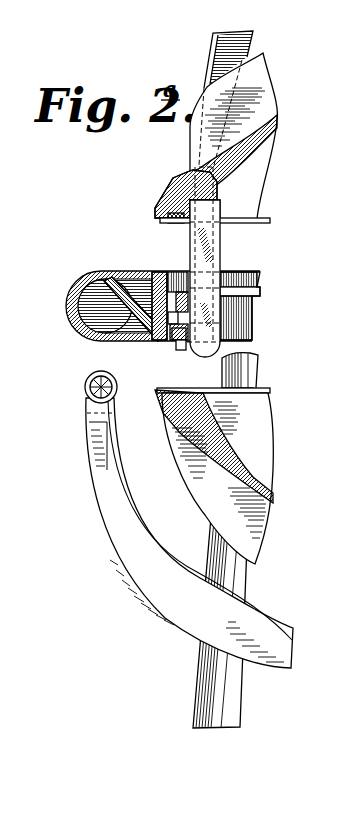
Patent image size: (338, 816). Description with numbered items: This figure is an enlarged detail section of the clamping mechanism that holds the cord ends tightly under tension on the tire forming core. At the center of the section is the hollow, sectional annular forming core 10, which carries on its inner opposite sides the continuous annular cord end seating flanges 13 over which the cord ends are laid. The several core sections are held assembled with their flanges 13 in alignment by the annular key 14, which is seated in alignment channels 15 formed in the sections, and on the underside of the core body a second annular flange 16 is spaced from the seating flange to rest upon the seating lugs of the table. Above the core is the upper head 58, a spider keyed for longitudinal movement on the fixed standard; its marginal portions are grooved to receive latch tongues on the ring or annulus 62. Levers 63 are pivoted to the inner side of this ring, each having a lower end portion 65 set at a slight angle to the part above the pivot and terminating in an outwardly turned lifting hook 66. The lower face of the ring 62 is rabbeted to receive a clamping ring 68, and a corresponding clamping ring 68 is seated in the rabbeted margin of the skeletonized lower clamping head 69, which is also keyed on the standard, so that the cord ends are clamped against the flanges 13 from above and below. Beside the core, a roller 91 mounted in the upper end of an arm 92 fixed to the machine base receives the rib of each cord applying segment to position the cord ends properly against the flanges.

The annular forming core 10 is at (78, 278).
The cord end seating flanges 13 is at (160, 271).
The annular key 14 is at (182, 272).
The alignment channels 15 is at (187, 307).
The second annular flange 16 is at (160, 343).
The upper head 58 is at (262, 92).
The ring or annulus 62 is at (173, 192).
The levers 63 is at (255, 35).
The lower end portion of lever 65 is at (222, 247).
The lifting hook 66 is at (176, 333).
The clamping ring 68 is at (160, 220).
The lower clamping head 69 is at (180, 412).
The roller 91 is at (85, 387).
The arm 92 is at (90, 483).